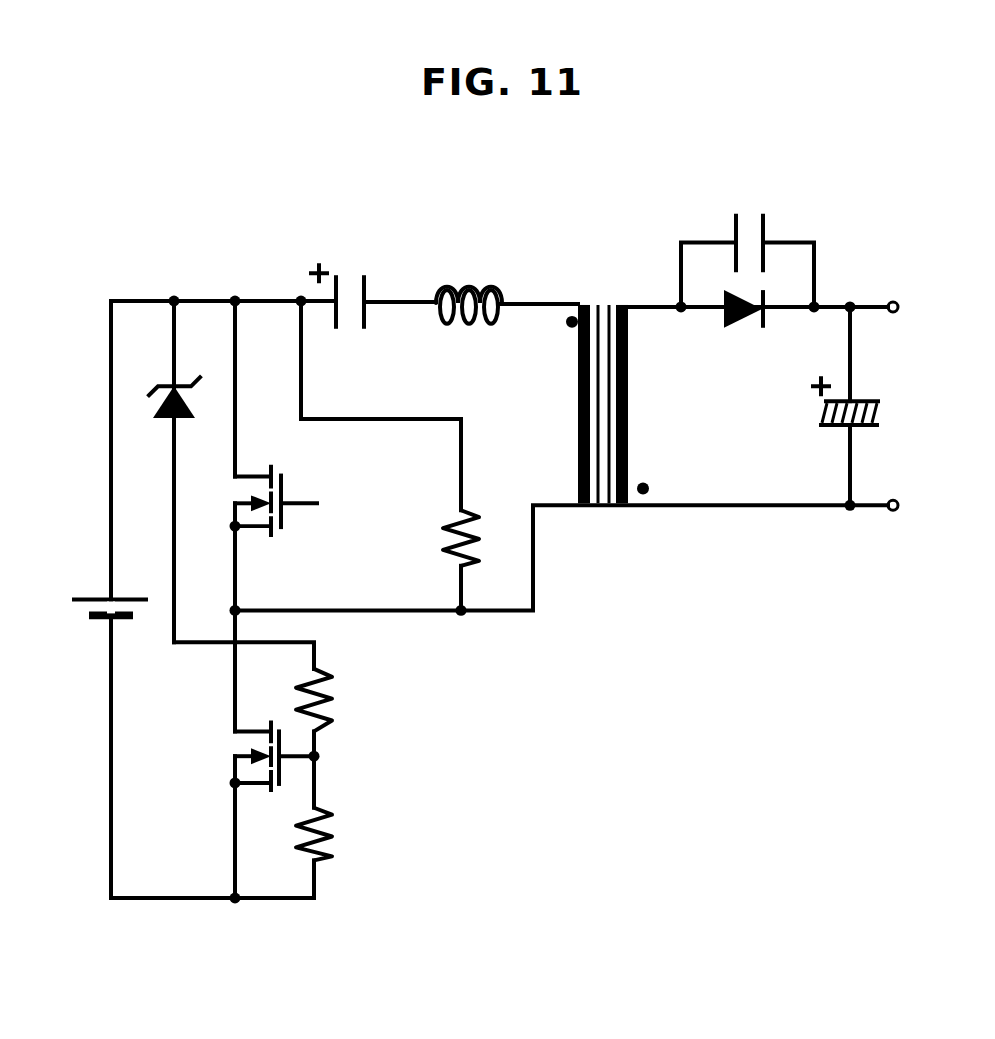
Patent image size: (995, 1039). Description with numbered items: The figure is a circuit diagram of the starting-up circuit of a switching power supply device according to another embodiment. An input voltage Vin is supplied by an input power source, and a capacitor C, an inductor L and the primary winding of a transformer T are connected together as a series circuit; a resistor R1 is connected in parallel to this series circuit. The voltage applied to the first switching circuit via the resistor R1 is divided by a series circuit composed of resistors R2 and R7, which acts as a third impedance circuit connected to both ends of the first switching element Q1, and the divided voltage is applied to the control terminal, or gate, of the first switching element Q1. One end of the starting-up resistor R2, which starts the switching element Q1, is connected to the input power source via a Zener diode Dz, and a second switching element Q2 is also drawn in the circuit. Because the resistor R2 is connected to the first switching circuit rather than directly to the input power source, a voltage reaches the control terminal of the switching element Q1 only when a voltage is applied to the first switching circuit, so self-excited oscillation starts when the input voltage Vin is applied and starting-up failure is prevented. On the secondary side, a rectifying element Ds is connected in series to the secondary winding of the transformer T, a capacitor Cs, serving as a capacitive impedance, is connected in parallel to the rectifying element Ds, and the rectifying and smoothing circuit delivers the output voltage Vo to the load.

The input voltage Vin is at (93, 588).
The Zener diode Dz is at (165, 471).
The capacitor C is at (332, 284).
The inductor L is at (469, 288).
The transformer T is at (607, 391).
The capacitor (capacitive impedance) Cs is at (747, 243).
The rectifying element Ds is at (743, 328).
The output voltage Vo is at (860, 347).
The first switching element Q1 is at (249, 755).
The second switching element Q2 is at (252, 501).
The resistor R1 is at (478, 519).
The starting-up resistor R2 is at (335, 700).
The resistor R7 is at (335, 834).